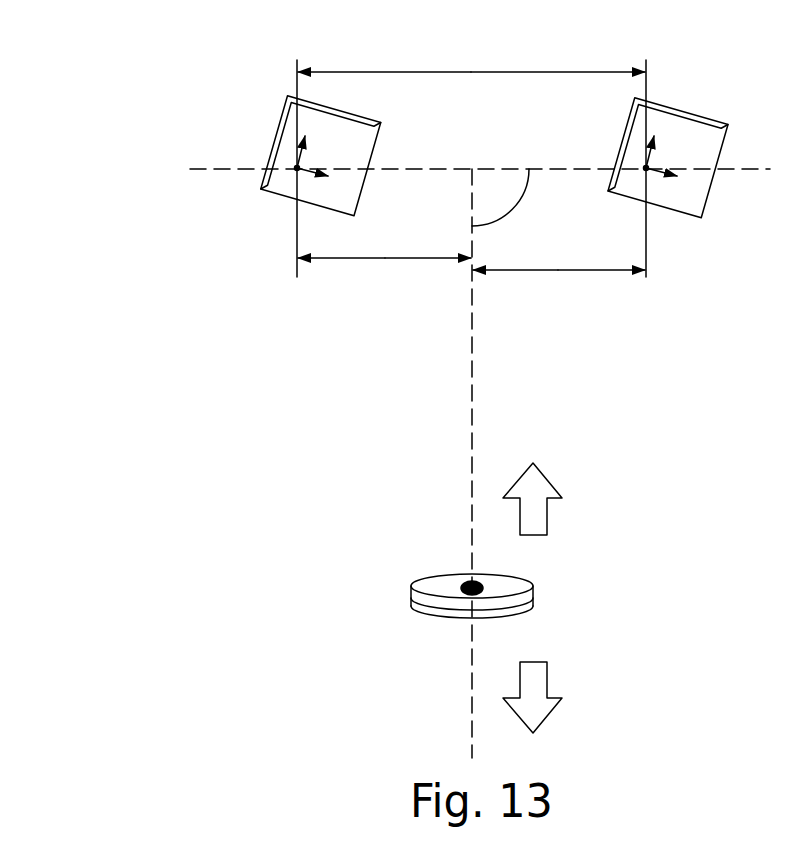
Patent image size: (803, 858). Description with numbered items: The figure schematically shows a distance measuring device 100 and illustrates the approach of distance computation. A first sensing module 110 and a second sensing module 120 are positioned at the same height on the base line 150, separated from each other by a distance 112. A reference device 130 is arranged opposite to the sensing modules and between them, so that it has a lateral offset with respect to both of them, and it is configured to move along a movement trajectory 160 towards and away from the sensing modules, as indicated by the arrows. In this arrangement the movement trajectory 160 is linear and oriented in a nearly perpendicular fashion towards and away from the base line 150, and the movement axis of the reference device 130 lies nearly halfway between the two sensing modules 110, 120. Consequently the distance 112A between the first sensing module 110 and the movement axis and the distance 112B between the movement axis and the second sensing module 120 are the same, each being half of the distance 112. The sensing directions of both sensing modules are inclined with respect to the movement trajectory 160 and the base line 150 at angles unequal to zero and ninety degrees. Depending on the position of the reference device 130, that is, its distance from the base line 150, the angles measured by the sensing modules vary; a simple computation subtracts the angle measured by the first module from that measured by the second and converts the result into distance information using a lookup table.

The distance measuring device 100 is at (184, 120).
The first sensing module 110 is at (290, 198).
The distance 112 is at (477, 72).
The distance 112A is at (385, 260).
The distance 112B is at (558, 272).
The second sensing module 120 is at (688, 110).
The reference device 130 is at (533, 592).
The base line 150 is at (196, 172).
The movement trajectory 160 is at (473, 360).